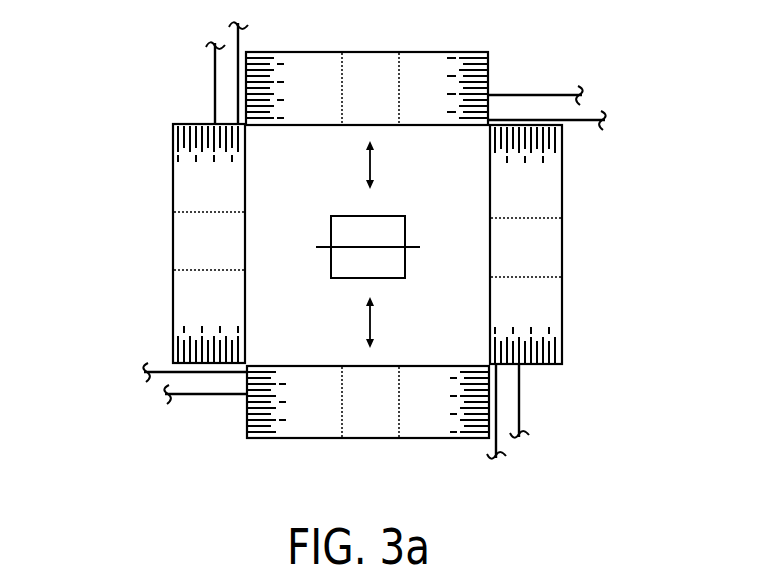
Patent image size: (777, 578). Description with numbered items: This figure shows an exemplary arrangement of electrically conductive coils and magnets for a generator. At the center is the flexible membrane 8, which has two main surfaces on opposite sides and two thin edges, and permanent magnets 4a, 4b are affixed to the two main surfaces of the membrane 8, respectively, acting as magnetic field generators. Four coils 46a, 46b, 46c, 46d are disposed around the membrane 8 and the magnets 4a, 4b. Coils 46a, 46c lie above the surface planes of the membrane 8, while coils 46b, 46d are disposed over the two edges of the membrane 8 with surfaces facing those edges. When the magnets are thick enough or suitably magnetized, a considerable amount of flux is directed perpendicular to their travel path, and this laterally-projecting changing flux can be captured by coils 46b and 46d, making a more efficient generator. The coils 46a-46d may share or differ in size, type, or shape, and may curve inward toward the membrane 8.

The coil 46a is at (247, 430).
The coil 46b is at (535, 182).
The coil 46c is at (442, 62).
The coil 46d is at (193, 310).
The permanent magnet 4a is at (398, 266).
The permanent magnet 4b is at (398, 228).
The membrane 8 is at (322, 243).